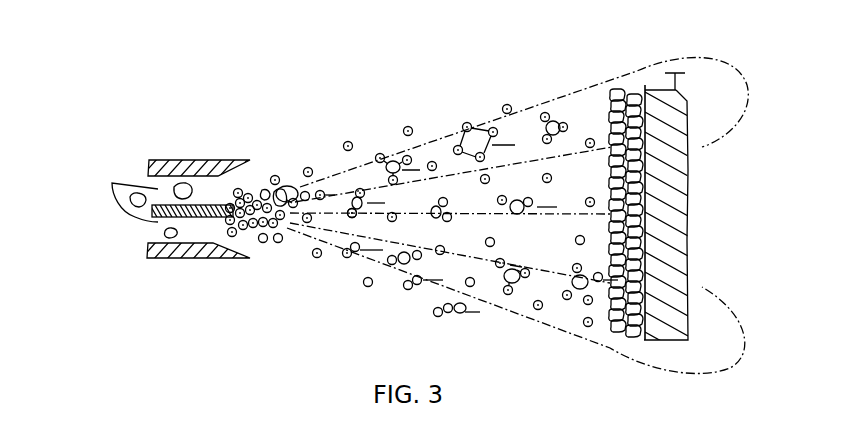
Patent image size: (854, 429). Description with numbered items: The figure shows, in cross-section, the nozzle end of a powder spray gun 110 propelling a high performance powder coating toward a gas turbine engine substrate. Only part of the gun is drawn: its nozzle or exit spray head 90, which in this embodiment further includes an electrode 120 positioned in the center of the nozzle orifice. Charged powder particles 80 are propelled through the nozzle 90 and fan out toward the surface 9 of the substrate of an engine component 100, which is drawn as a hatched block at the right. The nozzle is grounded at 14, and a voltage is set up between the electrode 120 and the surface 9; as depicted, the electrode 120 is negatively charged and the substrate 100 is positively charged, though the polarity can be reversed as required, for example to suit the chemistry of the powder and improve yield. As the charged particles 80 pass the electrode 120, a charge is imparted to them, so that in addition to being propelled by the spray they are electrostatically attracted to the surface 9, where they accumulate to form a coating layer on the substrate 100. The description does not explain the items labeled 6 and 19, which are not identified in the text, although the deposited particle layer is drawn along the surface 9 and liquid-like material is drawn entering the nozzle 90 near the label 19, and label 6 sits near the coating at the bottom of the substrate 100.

The deposited particle layer 6 is at (637, 330).
The surface 9 is at (645, 88).
The ground 14 is at (687, 67).
The liquid sample 19 is at (129, 206).
The charged powder particles 80 is at (504, 107).
The nozzle 90 is at (196, 158).
The engine component 100 is at (690, 252).
The powder spray gun 110 is at (137, 121).
The electrode 120 is at (197, 220).